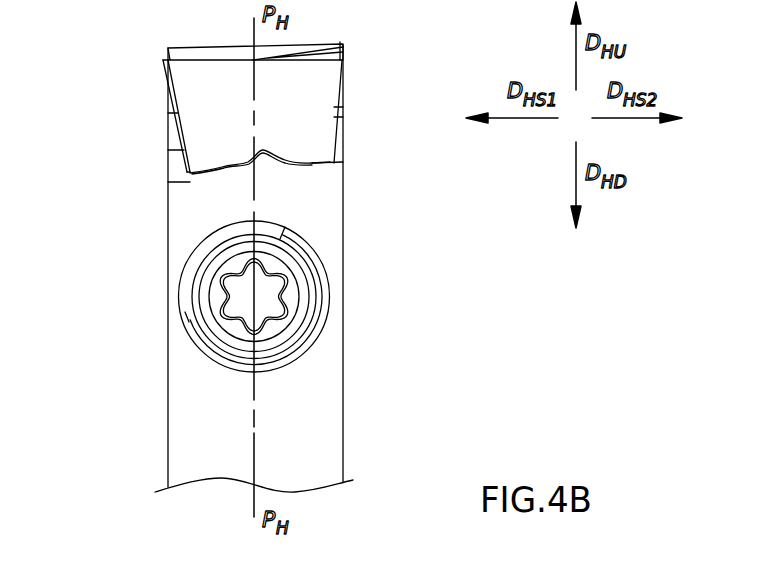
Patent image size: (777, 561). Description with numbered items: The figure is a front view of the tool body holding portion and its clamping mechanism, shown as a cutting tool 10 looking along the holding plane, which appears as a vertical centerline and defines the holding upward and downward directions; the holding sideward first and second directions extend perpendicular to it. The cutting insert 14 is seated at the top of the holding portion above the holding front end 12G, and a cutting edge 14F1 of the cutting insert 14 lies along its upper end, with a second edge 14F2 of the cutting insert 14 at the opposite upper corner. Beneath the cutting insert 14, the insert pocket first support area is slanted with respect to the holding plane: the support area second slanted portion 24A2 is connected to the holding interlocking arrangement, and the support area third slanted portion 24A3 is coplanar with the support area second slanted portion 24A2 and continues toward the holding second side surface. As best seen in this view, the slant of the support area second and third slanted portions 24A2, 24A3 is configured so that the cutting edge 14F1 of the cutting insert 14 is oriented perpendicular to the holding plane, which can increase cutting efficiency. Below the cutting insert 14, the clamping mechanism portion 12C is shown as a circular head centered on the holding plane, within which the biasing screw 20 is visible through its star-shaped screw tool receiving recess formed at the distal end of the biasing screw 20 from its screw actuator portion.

The cutting tool 10 is at (80, 422).
The clamping screw head 12C is at (330, 259).
The holding front end 12G is at (310, 428).
The cutting insert 14 is at (318, 148).
The cutting edge 14F1 is at (168, 48).
The second insert flank face 14F2 is at (343, 42).
The biasing screw 20 is at (265, 303).
The support area second slanted portion 24A2 is at (202, 174).
The support area third slanted portion 24A3 is at (320, 164).